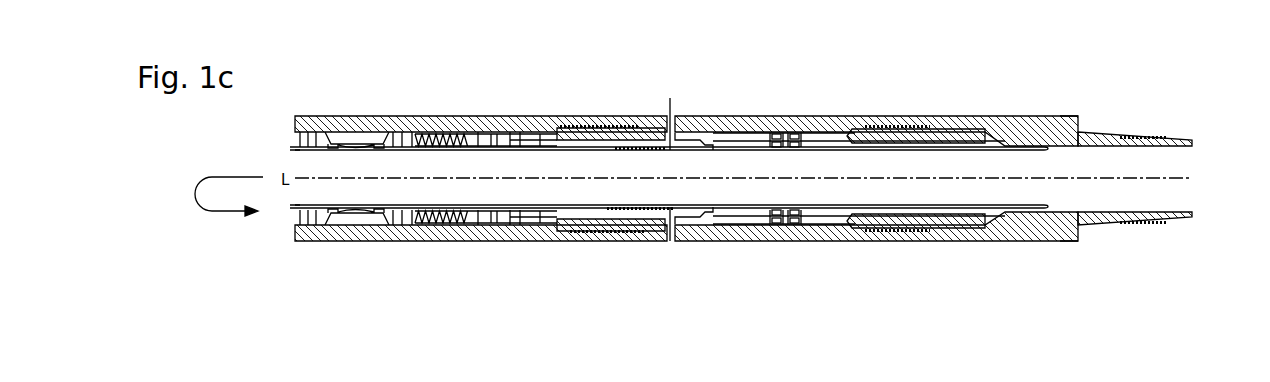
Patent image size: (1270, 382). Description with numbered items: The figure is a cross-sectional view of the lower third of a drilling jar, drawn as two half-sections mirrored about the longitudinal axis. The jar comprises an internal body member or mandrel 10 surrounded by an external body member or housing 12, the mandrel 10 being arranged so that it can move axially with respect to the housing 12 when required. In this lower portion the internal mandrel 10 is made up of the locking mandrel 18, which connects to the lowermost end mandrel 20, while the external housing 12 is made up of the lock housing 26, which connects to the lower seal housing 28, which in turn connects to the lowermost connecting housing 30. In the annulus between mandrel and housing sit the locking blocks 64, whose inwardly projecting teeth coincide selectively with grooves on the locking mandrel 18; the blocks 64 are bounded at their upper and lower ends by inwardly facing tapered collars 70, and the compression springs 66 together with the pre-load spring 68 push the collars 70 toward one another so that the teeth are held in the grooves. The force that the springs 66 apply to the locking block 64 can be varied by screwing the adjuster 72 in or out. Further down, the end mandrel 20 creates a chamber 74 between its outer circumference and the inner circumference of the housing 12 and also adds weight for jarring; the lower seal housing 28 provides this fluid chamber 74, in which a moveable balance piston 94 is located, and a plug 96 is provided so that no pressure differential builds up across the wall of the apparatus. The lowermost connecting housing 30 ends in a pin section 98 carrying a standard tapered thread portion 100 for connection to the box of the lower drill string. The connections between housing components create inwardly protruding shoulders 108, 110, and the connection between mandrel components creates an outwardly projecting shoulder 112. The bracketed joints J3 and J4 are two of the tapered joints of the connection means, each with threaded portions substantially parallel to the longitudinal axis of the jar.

The internal mandrel 10 is at (1068, 154).
The external housing 12 is at (1068, 104).
The locking mandrel 18 is at (300, 150).
The end mandrel 20 is at (738, 150).
The lock housing 26 is at (352, 128).
The lower seal housing 28 is at (818, 120).
The lowermost connecting housing 30 is at (1008, 117).
The locking block 64 is at (337, 138).
The compression springs 66 is at (465, 138).
The pre-load spring 68 is at (413, 140).
The tapered collar 70 is at (300, 133).
The adjuster 72 is at (512, 135).
The fluid chamber 74 is at (833, 133).
The balance piston 94 is at (780, 133).
The plug 96 is at (672, 103).
The pin section 98 is at (1107, 140).
The tapered thread portion 100 is at (1152, 137).
The inwardly protruding shoulder 108 is at (558, 132).
The inwardly protruding shoulder 110 is at (885, 126).
The outwardly projecting shoulder 112 is at (600, 125).
The joint J3 is at (648, 243).
The joint J4 is at (937, 244).